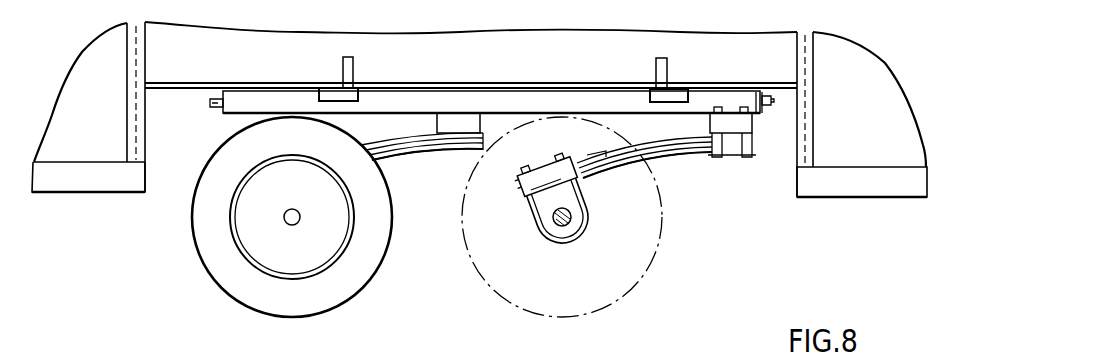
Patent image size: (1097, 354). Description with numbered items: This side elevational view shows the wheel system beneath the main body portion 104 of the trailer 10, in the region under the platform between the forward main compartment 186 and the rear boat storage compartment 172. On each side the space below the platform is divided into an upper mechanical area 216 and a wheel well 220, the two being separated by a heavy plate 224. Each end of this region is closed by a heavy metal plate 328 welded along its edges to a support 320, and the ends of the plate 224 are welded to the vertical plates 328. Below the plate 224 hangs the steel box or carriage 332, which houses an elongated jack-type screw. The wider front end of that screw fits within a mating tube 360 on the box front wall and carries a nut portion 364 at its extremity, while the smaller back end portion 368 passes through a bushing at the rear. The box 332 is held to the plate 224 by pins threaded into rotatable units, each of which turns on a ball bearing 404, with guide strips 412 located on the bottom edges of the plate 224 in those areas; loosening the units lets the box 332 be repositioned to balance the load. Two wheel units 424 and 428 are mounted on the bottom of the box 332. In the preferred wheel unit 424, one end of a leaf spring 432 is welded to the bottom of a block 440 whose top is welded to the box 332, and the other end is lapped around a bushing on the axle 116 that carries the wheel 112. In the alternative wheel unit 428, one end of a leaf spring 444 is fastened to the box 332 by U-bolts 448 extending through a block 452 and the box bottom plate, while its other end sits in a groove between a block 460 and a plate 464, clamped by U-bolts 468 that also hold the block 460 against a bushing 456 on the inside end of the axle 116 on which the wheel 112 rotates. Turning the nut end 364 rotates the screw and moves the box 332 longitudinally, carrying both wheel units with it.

The vehicle 10 is at (359, 346).
The main body portion 104 is at (848, 197).
The wheel 112 is at (217, 260).
The axle 116 is at (290, 218).
The boat storage compartment 172 is at (88, 85).
The main compartment 186 is at (843, 64).
The upper mechanical area 216 is at (268, 57).
The wheel well 220 is at (167, 178).
The heavy plate 224 is at (412, 84).
The support 320 is at (128, 132).
The heavy metal plate 328 is at (128, 58).
The box 332 is at (540, 106).
The mating tube 360 is at (766, 96).
The nut portion 364 is at (768, 113).
The back end portion 368 is at (215, 105).
The ball bearing 404 is at (347, 57).
The guide strip 412 is at (348, 93).
The wheel unit 424 is at (362, 207).
The wheel unit 428 is at (522, 210).
The leaf spring 432 is at (426, 145).
The block 440 is at (437, 117).
The leaf spring 444 is at (658, 166).
The U-bolts 448 is at (733, 154).
The block 452 is at (710, 120).
The bushing 456 is at (563, 233).
The block 460 is at (550, 187).
The plate 464 is at (551, 167).
The U-bolts 468 is at (540, 222).